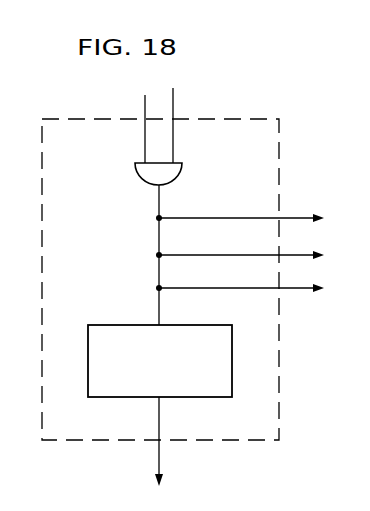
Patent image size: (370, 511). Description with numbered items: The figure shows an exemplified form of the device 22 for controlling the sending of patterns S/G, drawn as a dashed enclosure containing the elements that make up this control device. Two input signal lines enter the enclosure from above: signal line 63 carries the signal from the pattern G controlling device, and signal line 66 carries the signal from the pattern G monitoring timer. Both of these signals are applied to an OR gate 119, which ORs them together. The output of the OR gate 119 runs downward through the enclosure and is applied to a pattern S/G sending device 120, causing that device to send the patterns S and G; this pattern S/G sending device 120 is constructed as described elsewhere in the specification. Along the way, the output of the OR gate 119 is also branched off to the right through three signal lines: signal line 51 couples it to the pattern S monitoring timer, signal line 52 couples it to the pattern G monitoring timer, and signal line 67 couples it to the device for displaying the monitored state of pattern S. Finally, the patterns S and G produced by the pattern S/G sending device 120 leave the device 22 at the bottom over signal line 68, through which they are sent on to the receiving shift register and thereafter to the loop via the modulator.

The device for controlling the sending of patterns S/G 22 is at (332, 161).
The signal line 66 is at (143, 98).
The signal line 63 is at (174, 105).
The OR gate 119 is at (181, 177).
The signal line 51 is at (296, 207).
The signal line 52 is at (296, 243).
The signal line 67 is at (287, 290).
The pattern S/G sending device 120 is at (135, 322).
The signal line 68 is at (161, 452).